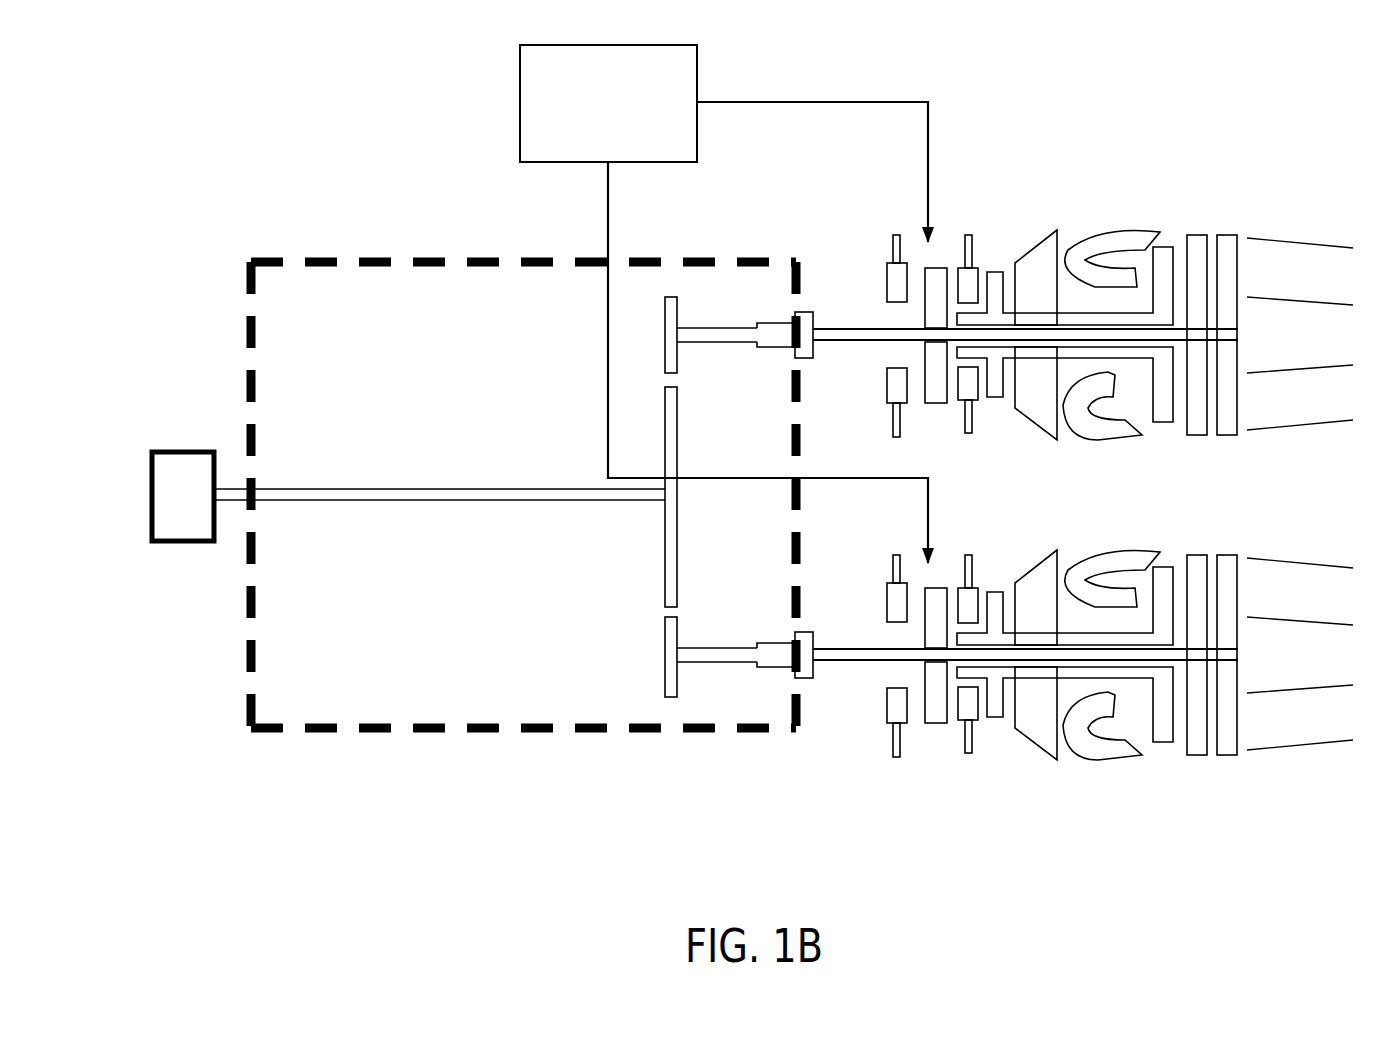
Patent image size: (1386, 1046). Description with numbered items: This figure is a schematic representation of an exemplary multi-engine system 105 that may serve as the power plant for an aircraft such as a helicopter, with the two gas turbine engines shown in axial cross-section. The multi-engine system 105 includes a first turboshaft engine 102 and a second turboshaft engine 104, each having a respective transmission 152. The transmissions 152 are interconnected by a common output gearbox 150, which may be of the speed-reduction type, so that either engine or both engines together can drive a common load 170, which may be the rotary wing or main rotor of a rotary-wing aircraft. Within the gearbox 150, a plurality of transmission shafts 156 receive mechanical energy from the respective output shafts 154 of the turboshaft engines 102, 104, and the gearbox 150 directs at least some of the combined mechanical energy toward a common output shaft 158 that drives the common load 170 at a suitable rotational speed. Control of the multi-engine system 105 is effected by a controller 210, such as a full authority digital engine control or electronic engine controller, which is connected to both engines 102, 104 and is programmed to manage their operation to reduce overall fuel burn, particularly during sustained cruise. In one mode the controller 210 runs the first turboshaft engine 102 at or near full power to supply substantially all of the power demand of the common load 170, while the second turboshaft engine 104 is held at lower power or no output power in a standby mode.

The first turboshaft engine 102 is at (1152, 183).
The second turboshaft engine 104 is at (1152, 805).
The multi-engine system 105 is at (482, 444).
The common output gearbox 150 is at (480, 735).
The transmission 152 is at (772, 363).
The output shaft 154 is at (840, 327).
The transmission shaft 156 is at (718, 328).
The common output shaft 158 is at (235, 502).
The common load 170 is at (185, 450).
The controller 210 is at (637, 142).